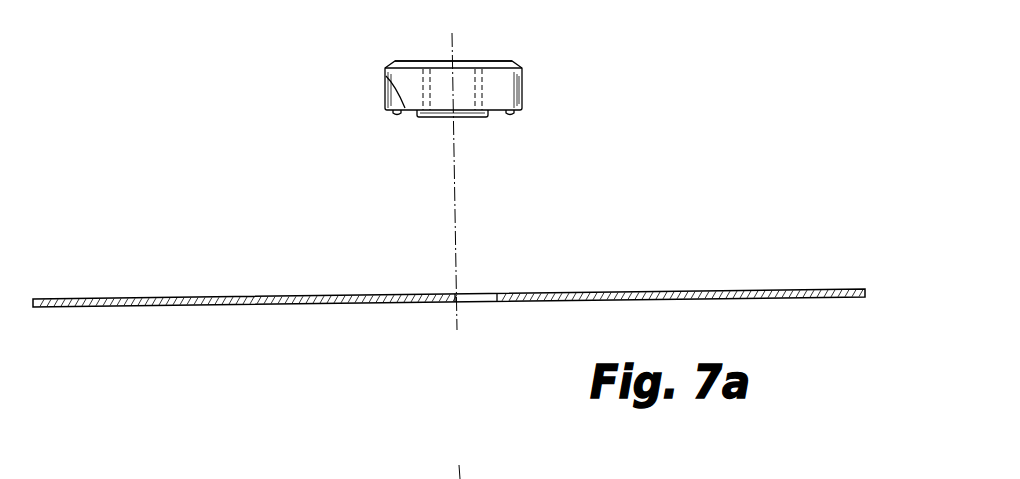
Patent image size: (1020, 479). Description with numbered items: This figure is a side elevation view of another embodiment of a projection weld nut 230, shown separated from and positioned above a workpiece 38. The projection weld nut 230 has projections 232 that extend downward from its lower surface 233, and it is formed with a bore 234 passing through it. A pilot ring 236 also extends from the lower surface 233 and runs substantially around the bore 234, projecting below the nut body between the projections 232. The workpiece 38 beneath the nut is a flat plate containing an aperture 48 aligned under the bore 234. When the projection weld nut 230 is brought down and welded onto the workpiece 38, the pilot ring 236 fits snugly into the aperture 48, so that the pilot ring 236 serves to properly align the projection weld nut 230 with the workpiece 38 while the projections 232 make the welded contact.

The projection weld nut 230 is at (505, 78).
The projections 232 is at (398, 116).
The lower surface 233 is at (386, 76).
The bore 234 is at (490, 61).
The pilot ring 236 is at (492, 114).
The workpiece 38 is at (573, 292).
The aperture 48 is at (458, 293).